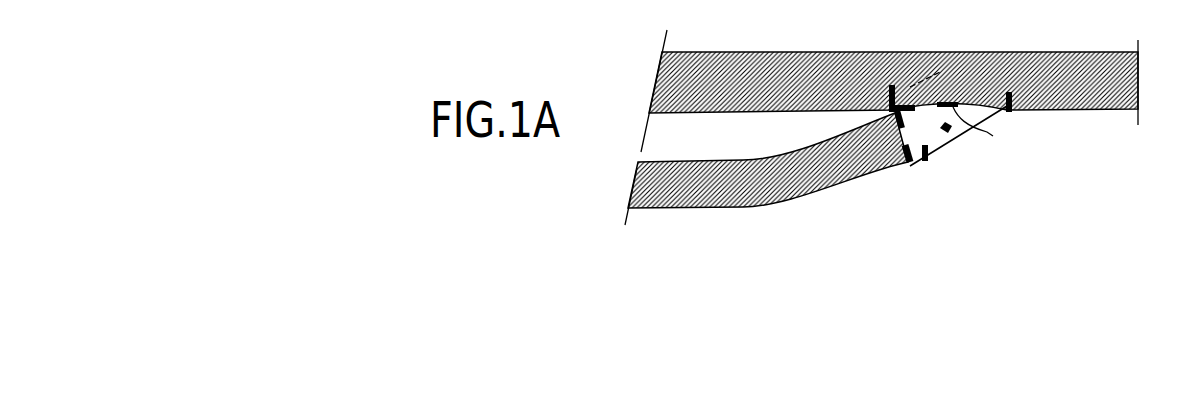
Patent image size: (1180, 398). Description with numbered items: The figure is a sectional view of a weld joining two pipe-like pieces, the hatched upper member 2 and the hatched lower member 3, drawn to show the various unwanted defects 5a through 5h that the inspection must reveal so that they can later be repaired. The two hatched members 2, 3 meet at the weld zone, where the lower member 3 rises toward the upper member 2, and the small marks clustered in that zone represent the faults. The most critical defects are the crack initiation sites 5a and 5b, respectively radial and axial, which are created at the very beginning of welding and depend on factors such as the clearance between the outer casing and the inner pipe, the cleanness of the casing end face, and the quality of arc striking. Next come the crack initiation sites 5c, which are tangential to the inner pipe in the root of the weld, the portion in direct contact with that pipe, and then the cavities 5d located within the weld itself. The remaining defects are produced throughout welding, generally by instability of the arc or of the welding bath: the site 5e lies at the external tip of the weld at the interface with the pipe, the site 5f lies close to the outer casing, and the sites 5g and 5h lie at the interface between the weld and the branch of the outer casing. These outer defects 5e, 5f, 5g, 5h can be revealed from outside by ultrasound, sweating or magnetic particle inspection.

The first substrate 2 is at (1102, 72).
The second substrate 3 is at (790, 197).
The radial crack initiation site 5a is at (915, 103).
The axial crack initiation site 5b is at (951, 103).
The tangential crack initiation site 5c is at (993, 136).
The cavity 5d is at (948, 132).
The crack initiation site at external tip of weld 5e is at (1013, 101).
The crack initiation site close to outer casing 5f is at (928, 151).
The crack initiation site at weld/casing branch interface 5g is at (898, 167).
The crack initiation site at weld/casing branch interface 5h is at (869, 124).